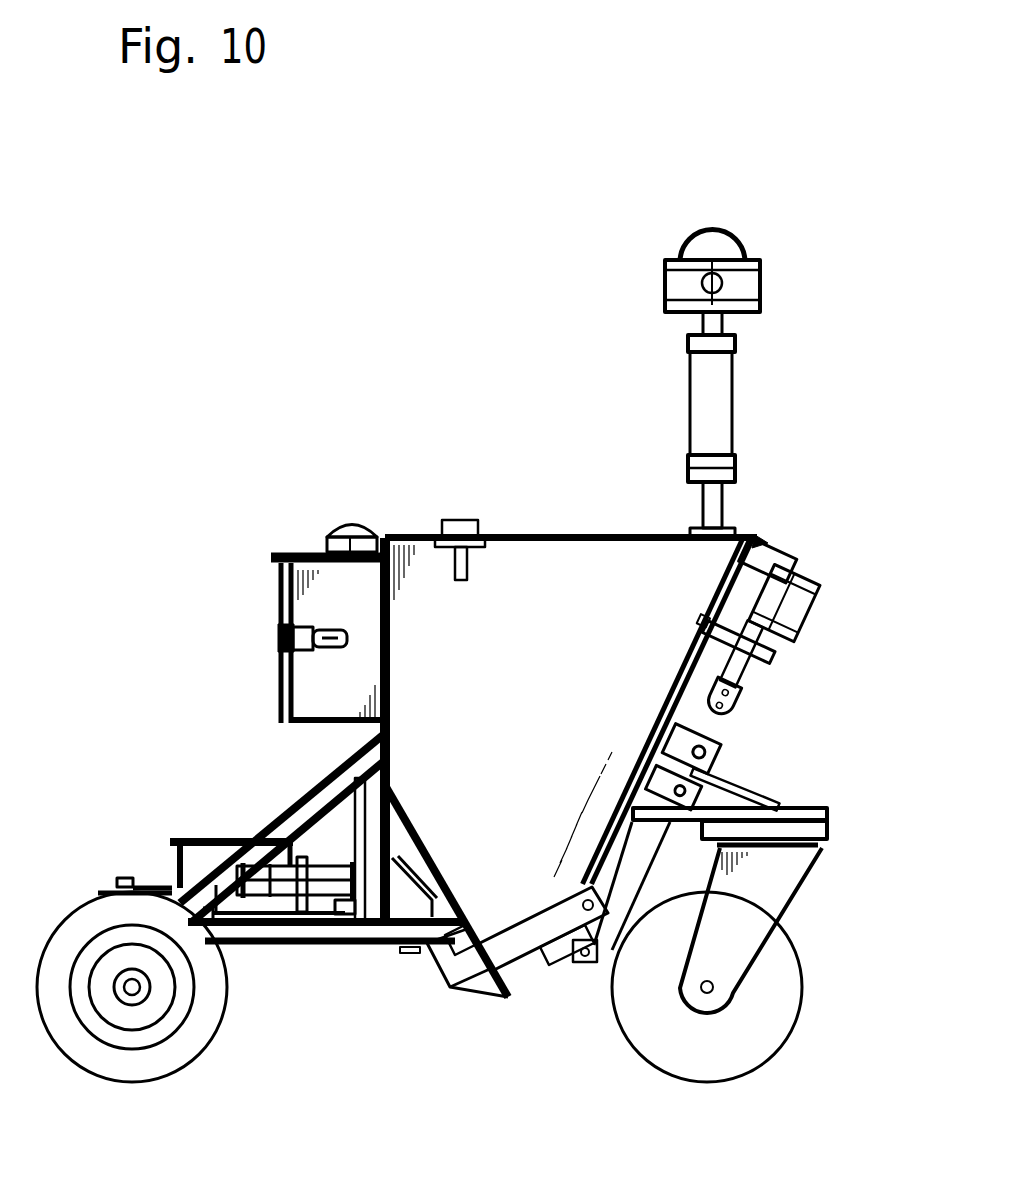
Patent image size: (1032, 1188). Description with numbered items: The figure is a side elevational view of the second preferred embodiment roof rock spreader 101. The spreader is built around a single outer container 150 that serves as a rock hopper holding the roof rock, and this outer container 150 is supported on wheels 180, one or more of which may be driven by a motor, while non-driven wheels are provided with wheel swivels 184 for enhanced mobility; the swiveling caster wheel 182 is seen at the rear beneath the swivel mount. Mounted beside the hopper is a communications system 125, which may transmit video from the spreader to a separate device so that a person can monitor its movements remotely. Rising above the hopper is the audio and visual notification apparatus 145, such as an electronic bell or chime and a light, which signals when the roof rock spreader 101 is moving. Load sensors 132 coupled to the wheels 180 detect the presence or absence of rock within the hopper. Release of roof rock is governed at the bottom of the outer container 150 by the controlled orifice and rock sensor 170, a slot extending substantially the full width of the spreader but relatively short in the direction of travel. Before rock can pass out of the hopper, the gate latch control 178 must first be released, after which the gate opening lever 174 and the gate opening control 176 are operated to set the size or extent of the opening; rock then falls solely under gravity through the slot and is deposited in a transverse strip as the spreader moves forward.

The roof rock spreader 101 is at (196, 309).
The communications system 125 is at (273, 621).
The load sensors 132 is at (826, 813).
The audio and visual notification apparatus 145 is at (668, 260).
The outer container 150 is at (590, 500).
The controlled orifice and rock sensor 170 is at (526, 975).
The gate opening lever 174 is at (587, 968).
The gate opening control 176 is at (733, 751).
The gate latch control 178 is at (488, 990).
The wheels 180 is at (193, 1052).
The caster wheel 182 is at (763, 1048).
The wheel swivels 184 is at (824, 850).